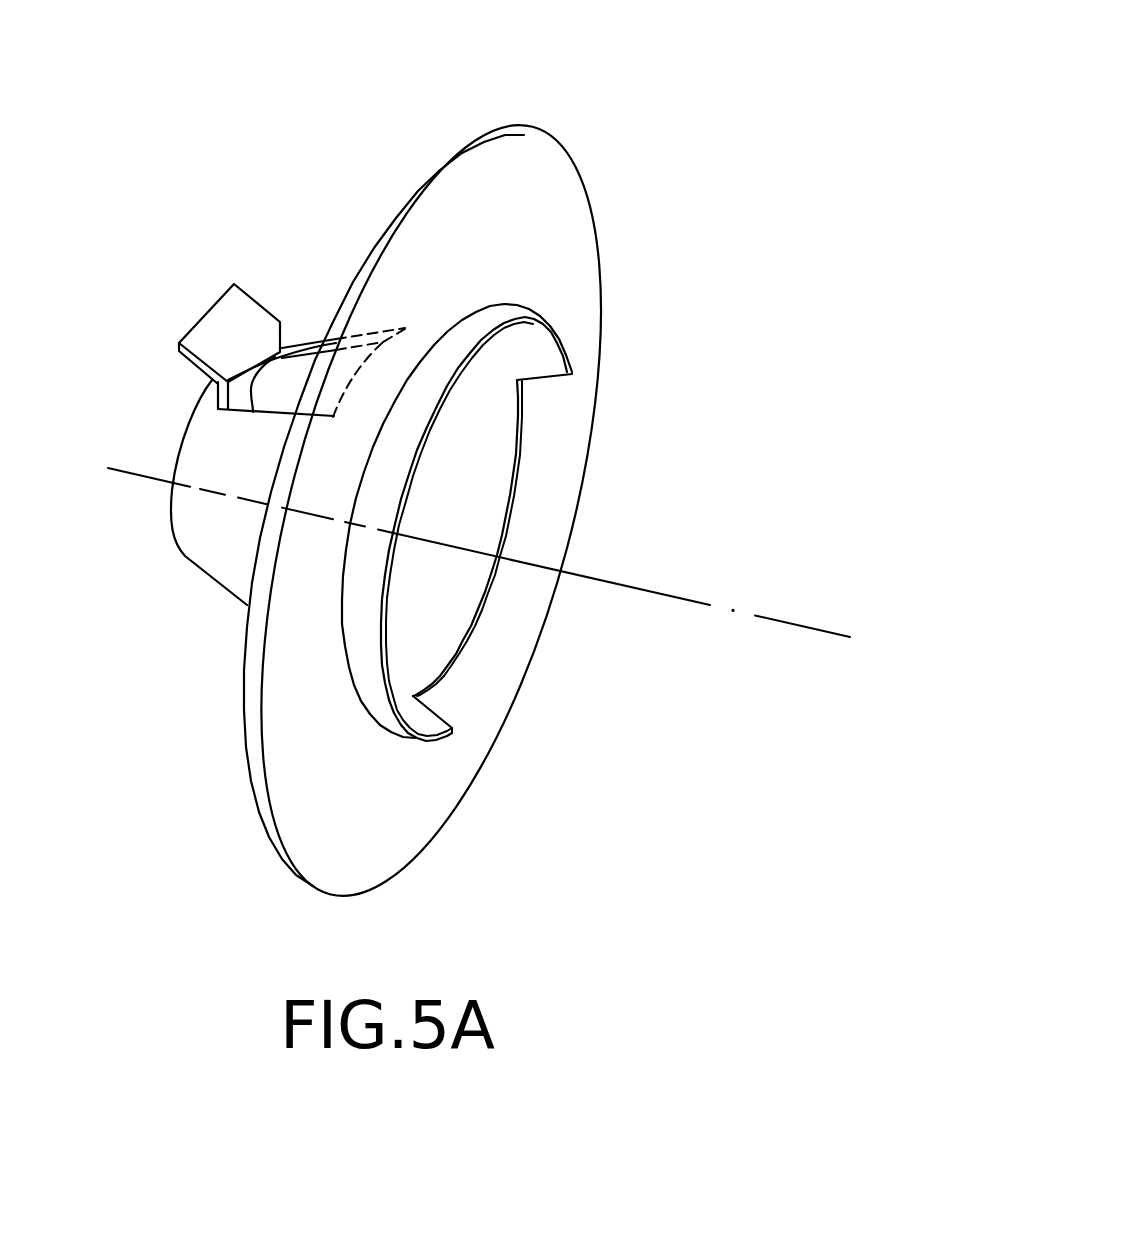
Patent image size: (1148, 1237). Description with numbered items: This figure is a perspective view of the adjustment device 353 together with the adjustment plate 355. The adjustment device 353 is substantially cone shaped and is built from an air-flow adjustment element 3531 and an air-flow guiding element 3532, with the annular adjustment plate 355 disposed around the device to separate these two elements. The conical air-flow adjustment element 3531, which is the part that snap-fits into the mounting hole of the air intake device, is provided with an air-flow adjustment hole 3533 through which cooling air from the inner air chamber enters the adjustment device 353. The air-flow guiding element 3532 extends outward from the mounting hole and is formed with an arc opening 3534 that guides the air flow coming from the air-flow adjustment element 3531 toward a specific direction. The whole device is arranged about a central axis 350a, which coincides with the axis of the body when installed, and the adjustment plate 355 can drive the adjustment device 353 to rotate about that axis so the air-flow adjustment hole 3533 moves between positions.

The adjustment device 353 is at (130, 712).
The adjustment plate 355 is at (525, 173).
The air-flow adjustment element 3531 is at (222, 528).
The air-flow guiding element 3532 is at (547, 356).
The air-flow adjustment hole 3533 is at (279, 387).
The arc opening 3534 is at (537, 478).
The central axis 350a is at (767, 615).